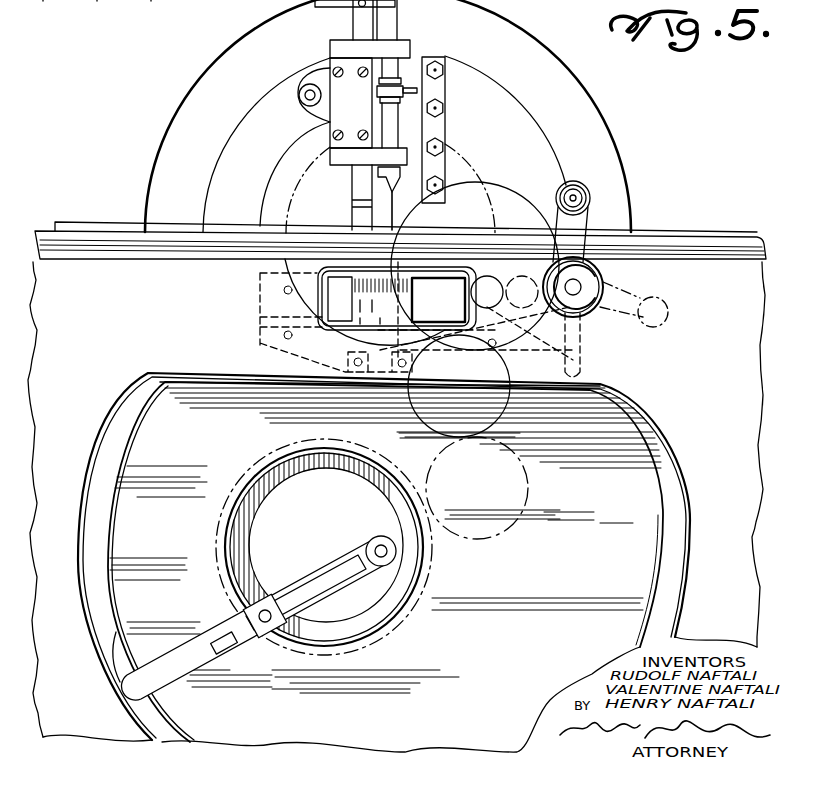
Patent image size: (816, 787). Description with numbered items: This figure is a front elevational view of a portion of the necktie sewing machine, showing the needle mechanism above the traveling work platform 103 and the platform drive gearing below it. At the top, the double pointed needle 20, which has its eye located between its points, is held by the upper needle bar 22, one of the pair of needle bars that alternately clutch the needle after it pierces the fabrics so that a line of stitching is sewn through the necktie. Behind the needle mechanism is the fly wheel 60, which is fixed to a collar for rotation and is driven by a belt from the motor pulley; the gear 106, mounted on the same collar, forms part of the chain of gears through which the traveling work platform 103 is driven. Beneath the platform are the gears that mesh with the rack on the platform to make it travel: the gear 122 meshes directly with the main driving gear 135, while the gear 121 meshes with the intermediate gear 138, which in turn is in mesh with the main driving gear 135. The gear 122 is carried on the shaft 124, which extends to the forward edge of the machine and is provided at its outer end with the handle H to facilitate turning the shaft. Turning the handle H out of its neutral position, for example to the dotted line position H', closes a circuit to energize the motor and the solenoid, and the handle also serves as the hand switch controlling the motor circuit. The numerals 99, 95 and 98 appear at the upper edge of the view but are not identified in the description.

The upper member 99 is at (43, 10).
The upper member 95 is at (97, 10).
The upper member 98 is at (151, 10).
The upper needle bar 22 is at (395, 122).
The fly wheel 60 is at (592, 100).
The gear 106 is at (462, 155).
The double pointed needle 20 is at (381, 217).
The gear 122 is at (438, 252).
The main driving gear 135 is at (484, 266).
The intermediate gear 138 is at (518, 263).
The handle H is at (614, 214).
The gear 121 is at (608, 232).
The traveling work platform 103 is at (662, 250).
The dotted line position of handle H' is at (650, 298).
The shaft 124 is at (578, 293).